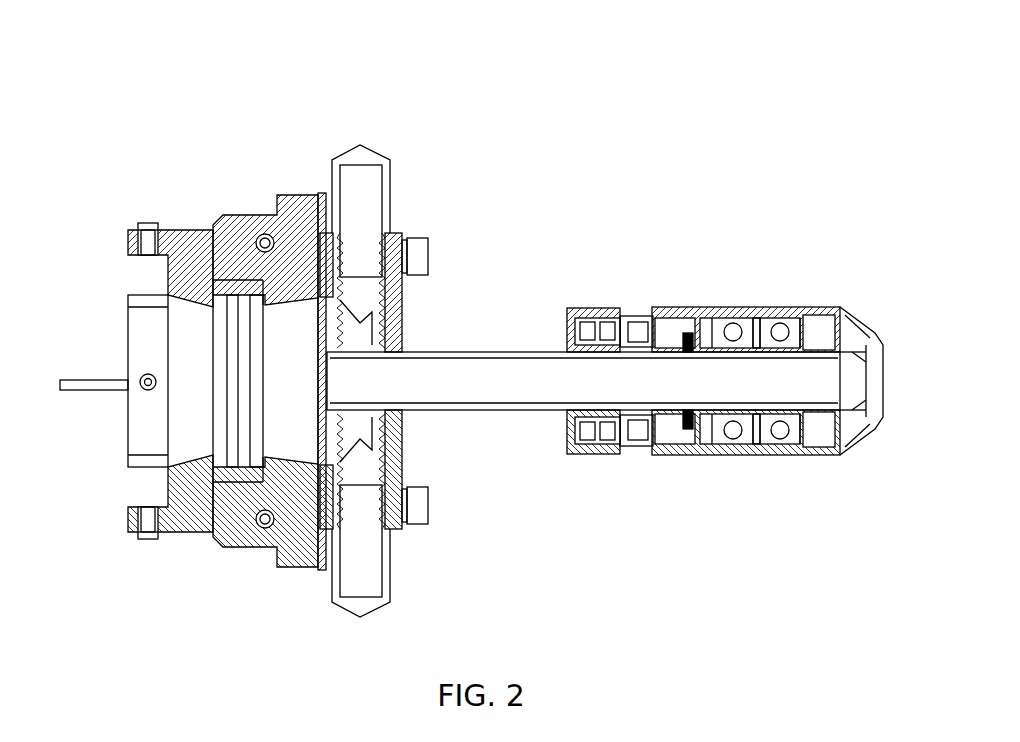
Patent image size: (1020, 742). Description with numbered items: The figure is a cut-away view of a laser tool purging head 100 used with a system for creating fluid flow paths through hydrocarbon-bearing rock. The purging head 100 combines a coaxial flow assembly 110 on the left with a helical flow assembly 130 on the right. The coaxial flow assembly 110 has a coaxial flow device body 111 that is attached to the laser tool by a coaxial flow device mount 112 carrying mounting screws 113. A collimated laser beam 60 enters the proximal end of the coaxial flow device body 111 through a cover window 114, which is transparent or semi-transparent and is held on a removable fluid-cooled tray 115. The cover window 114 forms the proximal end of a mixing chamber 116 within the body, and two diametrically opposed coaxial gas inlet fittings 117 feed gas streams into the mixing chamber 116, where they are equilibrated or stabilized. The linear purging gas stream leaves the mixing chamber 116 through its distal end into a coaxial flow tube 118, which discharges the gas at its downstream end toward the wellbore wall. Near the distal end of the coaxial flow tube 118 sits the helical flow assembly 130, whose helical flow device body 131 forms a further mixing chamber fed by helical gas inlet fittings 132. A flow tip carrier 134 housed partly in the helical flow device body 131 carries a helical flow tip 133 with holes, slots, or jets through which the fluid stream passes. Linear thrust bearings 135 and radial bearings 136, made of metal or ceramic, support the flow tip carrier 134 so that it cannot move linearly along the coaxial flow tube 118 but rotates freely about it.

The laser tool purging head 100 is at (478, 90).
The coaxial flow assembly 110 is at (155, 113).
The laser beam 60 is at (130, 385).
The coaxial flow device body 111 is at (257, 222).
The coaxial flow device mount 112 is at (126, 232).
The mounting screw 113 is at (150, 224).
The cover window 114 is at (238, 455).
The removable fluid-cooled tray 115 is at (247, 478).
The mixing chamber 116 is at (318, 290).
The coaxial gas inlet fitting 117 is at (393, 170).
The coaxial flow tube 118 is at (485, 352).
The helical flow assembly 130 is at (800, 185).
The helical flow device body 131 is at (697, 307).
The helical gas inlet fitting 132 is at (600, 307).
The helical flow tip 133 is at (875, 327).
The flow tip carrier 134 is at (803, 340).
The linear thrust bearing 135 is at (742, 444).
The radial bearing 136 is at (790, 441).